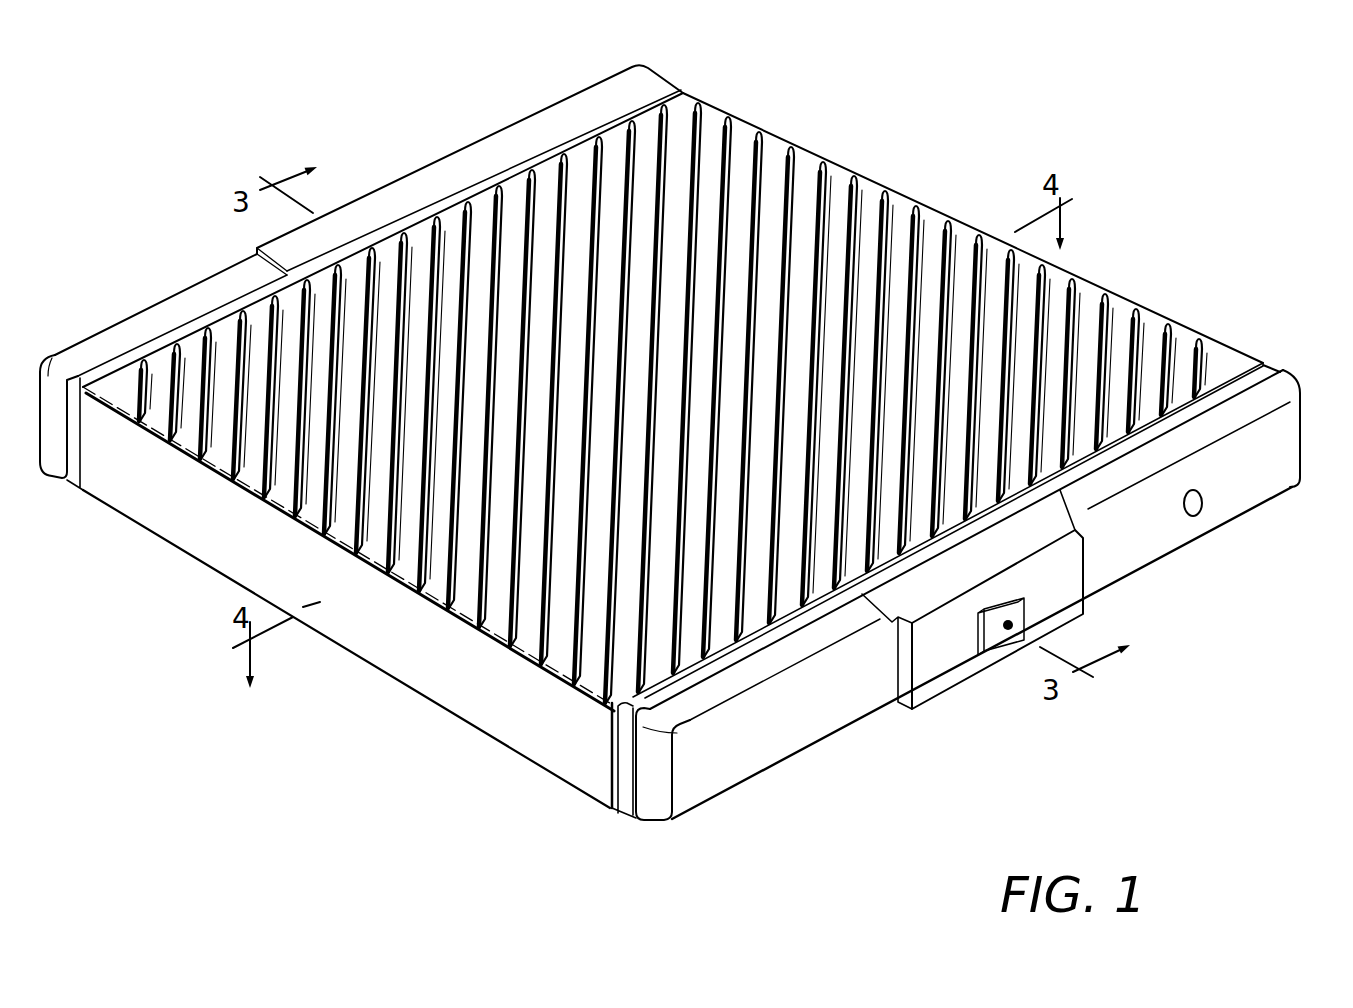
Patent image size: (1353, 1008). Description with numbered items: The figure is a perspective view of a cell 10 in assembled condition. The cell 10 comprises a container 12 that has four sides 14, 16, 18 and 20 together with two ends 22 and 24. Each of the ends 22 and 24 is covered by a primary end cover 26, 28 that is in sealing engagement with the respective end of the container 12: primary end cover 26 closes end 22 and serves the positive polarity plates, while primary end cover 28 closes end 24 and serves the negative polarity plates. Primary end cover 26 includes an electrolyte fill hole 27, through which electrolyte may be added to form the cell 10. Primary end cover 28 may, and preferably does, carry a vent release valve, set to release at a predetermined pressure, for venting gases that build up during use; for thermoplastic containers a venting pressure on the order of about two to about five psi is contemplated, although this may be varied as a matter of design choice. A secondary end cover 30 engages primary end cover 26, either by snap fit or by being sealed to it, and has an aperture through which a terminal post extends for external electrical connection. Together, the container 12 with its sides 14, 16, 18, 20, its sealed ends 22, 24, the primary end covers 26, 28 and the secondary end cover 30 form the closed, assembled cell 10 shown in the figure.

The cell 10 is at (1210, 281).
The container 12 is at (1237, 350).
The side 14 is at (798, 180).
The side 16 is at (878, 188).
The side 18 is at (607, 800).
The side 20 is at (493, 728).
The end 22 is at (1255, 362).
The end 24 is at (683, 90).
The primary end cover 26 is at (1283, 485).
The electrolyte fill hole 27 is at (1203, 512).
The primary end cover 28 is at (598, 90).
The secondary end cover 30 is at (1085, 605).